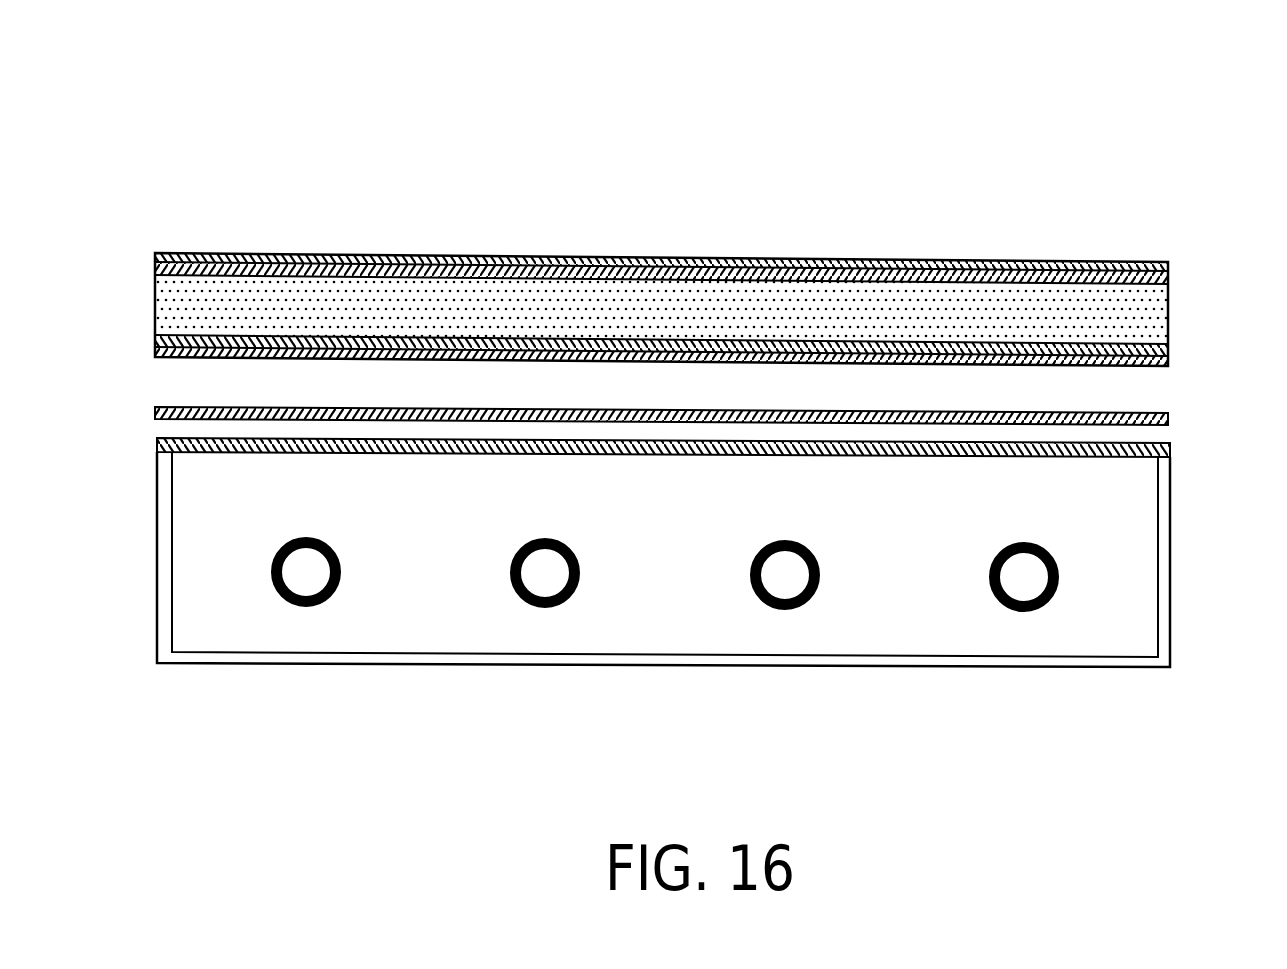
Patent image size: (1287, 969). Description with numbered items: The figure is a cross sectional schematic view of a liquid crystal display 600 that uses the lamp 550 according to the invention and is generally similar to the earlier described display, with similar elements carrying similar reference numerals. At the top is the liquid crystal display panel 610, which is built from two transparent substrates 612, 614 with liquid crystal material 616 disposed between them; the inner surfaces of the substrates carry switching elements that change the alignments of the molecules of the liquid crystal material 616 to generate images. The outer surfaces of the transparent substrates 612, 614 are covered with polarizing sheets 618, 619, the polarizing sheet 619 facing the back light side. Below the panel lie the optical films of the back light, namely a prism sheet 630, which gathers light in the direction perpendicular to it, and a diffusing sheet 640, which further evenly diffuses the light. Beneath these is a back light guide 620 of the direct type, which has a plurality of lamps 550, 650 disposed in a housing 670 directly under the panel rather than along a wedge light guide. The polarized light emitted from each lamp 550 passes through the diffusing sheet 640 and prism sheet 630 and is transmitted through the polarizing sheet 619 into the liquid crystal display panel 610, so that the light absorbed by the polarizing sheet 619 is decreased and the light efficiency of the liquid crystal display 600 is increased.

The liquid crystal display 600 is at (57, 140).
The liquid crystal display panel 610 is at (650, 292).
The transparent substrate 612 is at (253, 256).
The polarizing sheet 618 is at (483, 259).
The liquid crystal material 616 is at (172, 308).
The transparent substrate 614 is at (200, 345).
The polarizing sheet 619 is at (516, 359).
The prism sheet 630 is at (410, 408).
The back light guide 620 is at (711, 602).
The diffusing sheet 640 is at (634, 455).
The housing 670 is at (506, 656).
The lamp 650 is at (783, 608).
The lamp 550 is at (1046, 607).